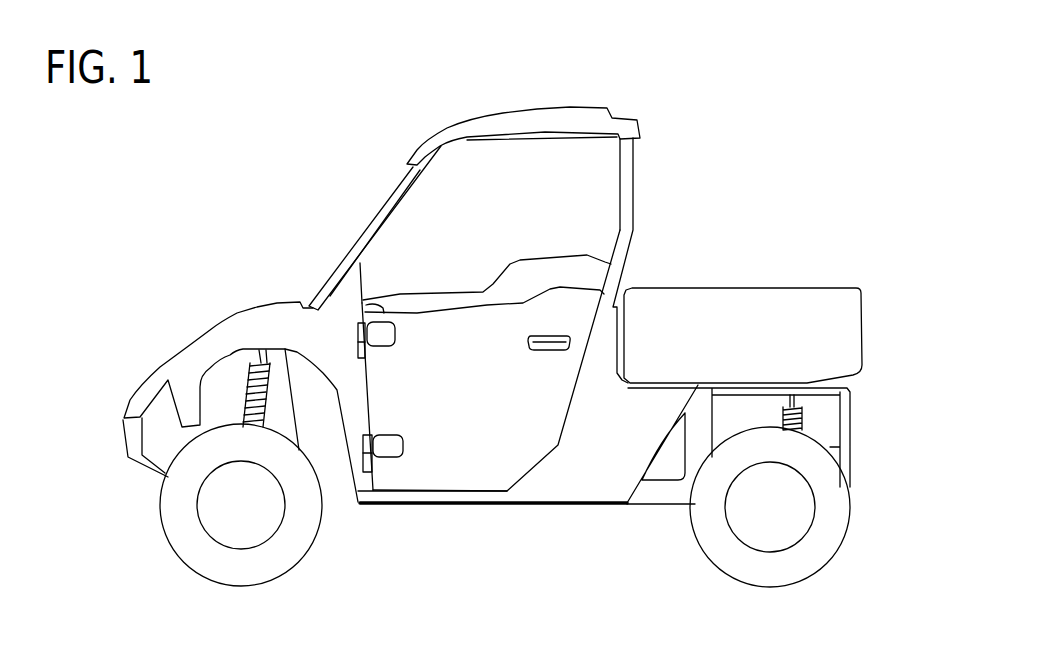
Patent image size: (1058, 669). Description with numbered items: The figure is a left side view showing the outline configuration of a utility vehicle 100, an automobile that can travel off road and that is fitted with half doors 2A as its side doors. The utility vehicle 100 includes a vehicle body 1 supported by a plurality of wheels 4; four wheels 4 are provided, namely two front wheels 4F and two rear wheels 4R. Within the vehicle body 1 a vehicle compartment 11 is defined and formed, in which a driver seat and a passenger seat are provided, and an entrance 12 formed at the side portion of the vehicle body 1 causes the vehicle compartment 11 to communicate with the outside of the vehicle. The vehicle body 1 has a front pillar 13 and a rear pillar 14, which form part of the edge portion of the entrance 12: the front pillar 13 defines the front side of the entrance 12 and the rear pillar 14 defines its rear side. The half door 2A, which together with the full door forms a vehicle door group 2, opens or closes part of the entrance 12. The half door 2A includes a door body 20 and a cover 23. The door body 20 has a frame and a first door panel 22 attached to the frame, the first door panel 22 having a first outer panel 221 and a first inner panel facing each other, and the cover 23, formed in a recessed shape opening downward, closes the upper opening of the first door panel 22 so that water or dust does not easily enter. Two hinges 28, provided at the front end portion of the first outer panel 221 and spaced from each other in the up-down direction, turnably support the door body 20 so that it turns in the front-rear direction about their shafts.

The utility vehicle 100 is at (401, 87).
The vehicle body 1 is at (548, 109).
The vehicle compartment 11 is at (460, 218).
The entrance 12 is at (380, 302).
The front pillar 13 is at (377, 235).
The rear pillar 14 is at (627, 178).
The cover 23 is at (592, 275).
The first outer panel 221 is at (583, 307).
The first door panel 22 is at (484, 300).
The half door 2A is at (544, 473).
The vehicle door group 2 is at (581, 391).
The door body 20 is at (470, 493).
The hinges 28 is at (390, 346).
The front wheels 4F is at (163, 527).
The rear wheels 4R is at (847, 530).
The wheels 4 is at (502, 505).